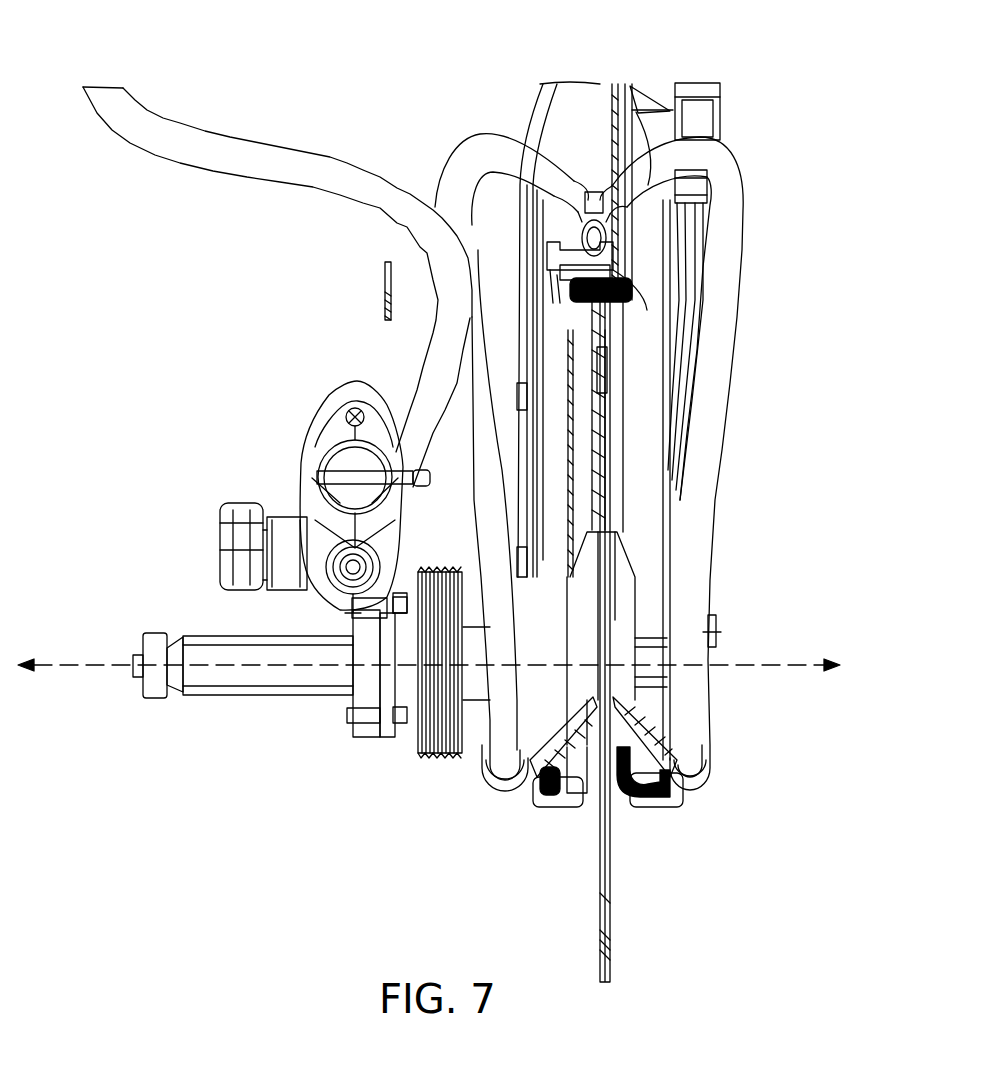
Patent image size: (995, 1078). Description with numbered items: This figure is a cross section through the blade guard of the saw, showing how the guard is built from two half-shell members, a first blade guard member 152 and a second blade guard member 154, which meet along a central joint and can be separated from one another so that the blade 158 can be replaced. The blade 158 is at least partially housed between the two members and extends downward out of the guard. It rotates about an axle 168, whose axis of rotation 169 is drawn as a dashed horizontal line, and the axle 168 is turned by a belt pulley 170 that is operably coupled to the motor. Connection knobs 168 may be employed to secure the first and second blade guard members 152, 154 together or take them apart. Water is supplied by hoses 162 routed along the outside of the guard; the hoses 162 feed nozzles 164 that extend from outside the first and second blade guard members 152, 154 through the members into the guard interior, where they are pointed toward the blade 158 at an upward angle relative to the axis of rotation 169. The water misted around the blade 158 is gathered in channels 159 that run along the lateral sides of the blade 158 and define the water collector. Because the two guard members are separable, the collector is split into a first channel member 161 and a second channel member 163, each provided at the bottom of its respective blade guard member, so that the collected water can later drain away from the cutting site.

The first blade guard member 152 is at (637, 92).
The second blade guard member 154 is at (547, 100).
The blade 158 is at (600, 893).
The channels 159 is at (552, 803).
The first channel member 161 is at (615, 810).
The hoses 162 is at (468, 157).
The second channel member 163 is at (577, 805).
The nozzles 164 is at (513, 795).
The axle 168 is at (230, 653).
The axis of rotation 169 is at (88, 665).
The belt pulley 170 is at (427, 727).